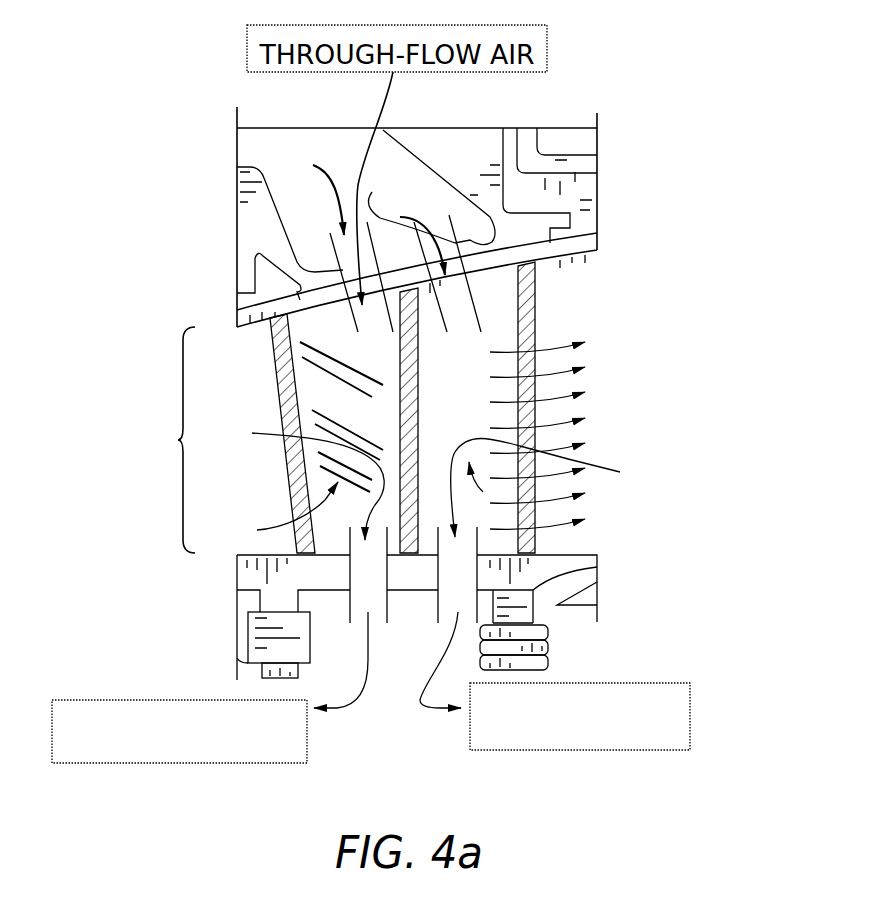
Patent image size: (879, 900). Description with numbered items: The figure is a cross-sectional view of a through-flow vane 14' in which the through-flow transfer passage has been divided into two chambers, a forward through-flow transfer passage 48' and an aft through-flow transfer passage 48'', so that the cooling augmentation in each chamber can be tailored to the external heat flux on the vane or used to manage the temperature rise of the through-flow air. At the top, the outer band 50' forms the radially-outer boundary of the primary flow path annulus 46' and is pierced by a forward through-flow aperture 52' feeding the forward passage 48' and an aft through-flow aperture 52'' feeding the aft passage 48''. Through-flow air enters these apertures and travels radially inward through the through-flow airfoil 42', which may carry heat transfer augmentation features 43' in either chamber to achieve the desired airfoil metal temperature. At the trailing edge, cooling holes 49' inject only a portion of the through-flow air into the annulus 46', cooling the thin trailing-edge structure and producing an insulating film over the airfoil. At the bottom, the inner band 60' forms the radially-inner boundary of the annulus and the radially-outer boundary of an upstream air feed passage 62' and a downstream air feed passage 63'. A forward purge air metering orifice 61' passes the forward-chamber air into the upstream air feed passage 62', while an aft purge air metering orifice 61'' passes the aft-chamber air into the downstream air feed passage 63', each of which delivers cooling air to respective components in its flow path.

The through-flow vane 14' is at (207, 173).
The outer band 50' is at (466, 220).
The forward through-flow aperture 52' is at (317, 204).
The aft through-flow aperture 52'' is at (440, 204).
The through-flow airfoil 42' is at (256, 430).
The heat transfer augmentation features 43' is at (297, 417).
The primary flow path annulus 46' is at (161, 440).
The forward purge air metering orifice 61' is at (298, 478).
The forward through-flow transfer passage 48' is at (278, 514).
The cooling holes 49' is at (571, 409).
The aft purge air metering orifice 61'' is at (563, 488).
The aft through-flow transfer passage 48'' is at (569, 492).
The inner band 60' is at (466, 603).
The upstream air feed passage 62' is at (210, 687).
The downstream air feed passage 63' is at (556, 681).